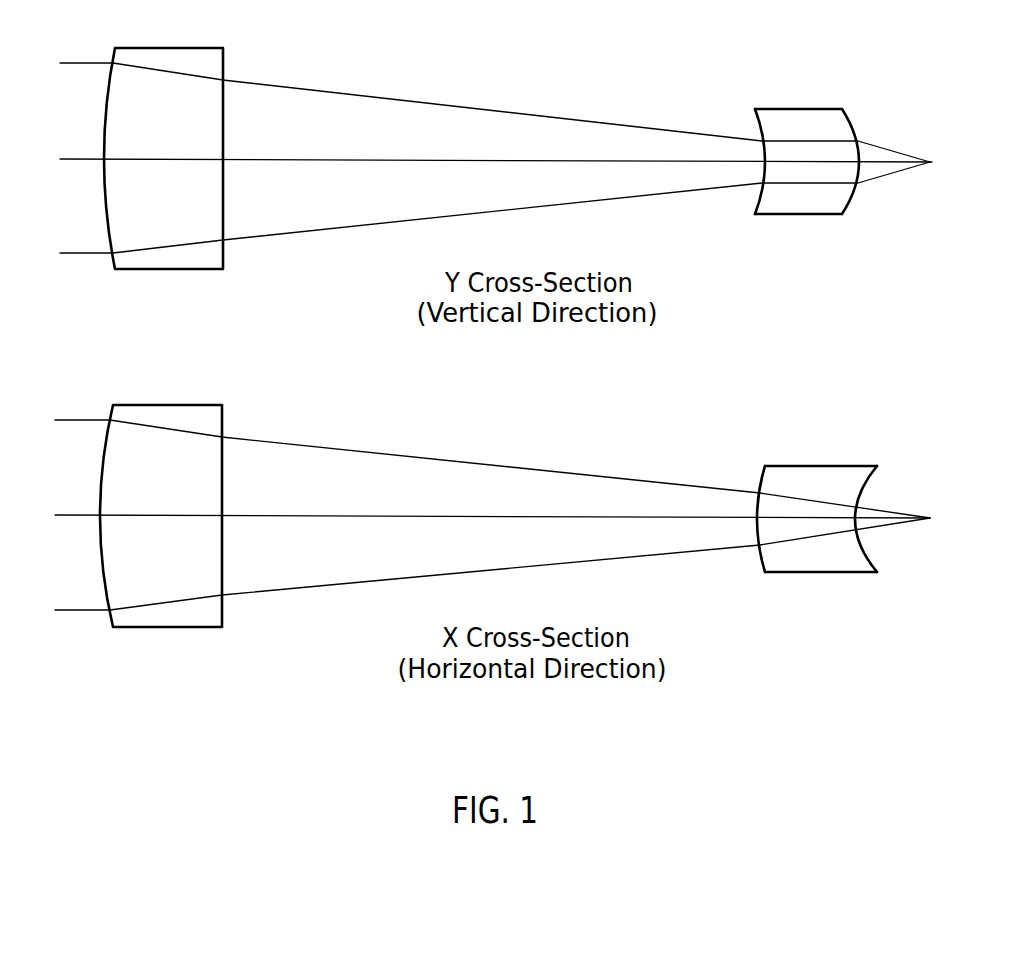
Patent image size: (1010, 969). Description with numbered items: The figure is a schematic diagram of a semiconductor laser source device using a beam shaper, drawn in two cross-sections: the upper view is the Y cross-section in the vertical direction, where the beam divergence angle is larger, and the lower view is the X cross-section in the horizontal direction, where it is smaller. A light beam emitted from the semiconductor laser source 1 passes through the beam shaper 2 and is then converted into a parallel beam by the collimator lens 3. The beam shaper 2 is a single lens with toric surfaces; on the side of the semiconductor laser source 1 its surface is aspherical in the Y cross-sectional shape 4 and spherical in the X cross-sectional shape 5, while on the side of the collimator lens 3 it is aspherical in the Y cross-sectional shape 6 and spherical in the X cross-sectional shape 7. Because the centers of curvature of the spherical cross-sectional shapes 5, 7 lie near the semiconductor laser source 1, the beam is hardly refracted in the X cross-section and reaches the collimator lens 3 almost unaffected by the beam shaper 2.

The semiconductor laser source 1 is at (522, 344).
The beam shaper 2 is at (818, 349).
The collimator lens 3 is at (208, 260).
The Y cross-sectional shape 4 is at (850, 121).
The X cross-sectional shape 5 is at (899, 522).
The Y cross-sectional shape 6 is at (757, 116).
The X cross-sectional shape 7 is at (760, 565).